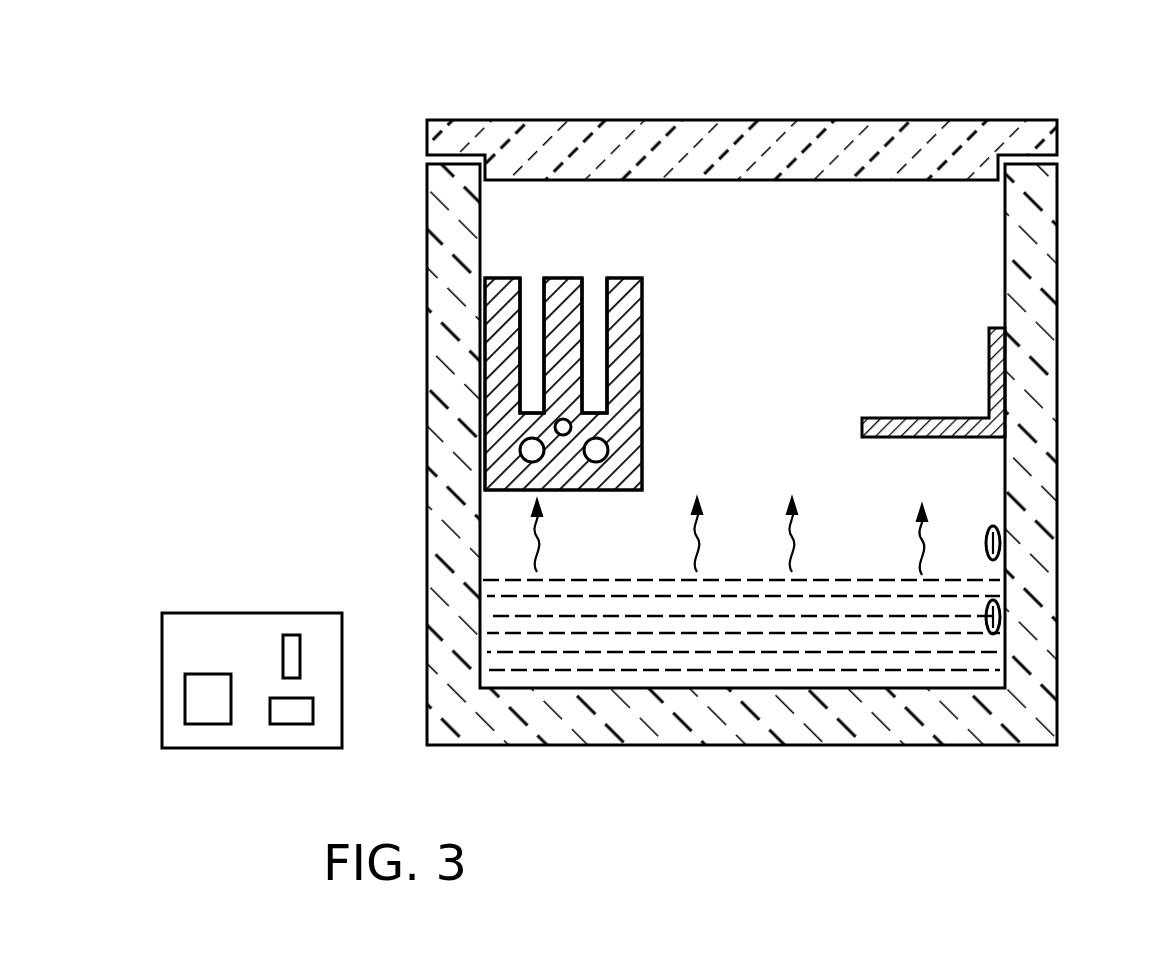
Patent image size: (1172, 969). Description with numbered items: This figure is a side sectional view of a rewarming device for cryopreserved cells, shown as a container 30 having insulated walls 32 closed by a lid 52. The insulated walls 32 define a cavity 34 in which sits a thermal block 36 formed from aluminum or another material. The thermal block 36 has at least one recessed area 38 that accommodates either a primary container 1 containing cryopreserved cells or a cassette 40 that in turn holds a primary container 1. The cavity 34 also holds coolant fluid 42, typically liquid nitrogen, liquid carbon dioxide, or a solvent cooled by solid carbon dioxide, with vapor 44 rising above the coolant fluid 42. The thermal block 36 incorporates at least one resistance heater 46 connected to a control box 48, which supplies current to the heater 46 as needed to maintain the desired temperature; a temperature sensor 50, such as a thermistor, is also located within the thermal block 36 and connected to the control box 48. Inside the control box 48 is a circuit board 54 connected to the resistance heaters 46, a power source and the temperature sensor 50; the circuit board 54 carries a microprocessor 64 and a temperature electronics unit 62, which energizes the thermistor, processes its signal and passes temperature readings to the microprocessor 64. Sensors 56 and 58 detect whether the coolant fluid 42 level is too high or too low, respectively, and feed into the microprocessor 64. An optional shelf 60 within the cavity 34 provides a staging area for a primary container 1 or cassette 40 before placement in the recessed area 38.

The primary container 1 is at (530, 290).
The container 30 is at (943, 788).
The insulated walls 32 is at (1057, 205).
The cavity 34 is at (857, 207).
The thermal block 36 is at (480, 302).
The recessed area 38 is at (595, 285).
The cassette 40 is at (517, 352).
The coolant fluid 42 is at (875, 600).
The vapor 44 is at (705, 550).
The resistance heater 46 is at (543, 460).
The control box 48 is at (248, 595).
The temperature sensor 50 is at (553, 432).
The lid 52 is at (987, 120).
The circuit board 54 is at (212, 722).
The sensor 56 is at (1005, 545).
The sensor 58 is at (1005, 617).
The shelf 60 is at (1010, 360).
The temperature electronics unit 62 is at (300, 655).
The microprocessor 64 is at (313, 710).